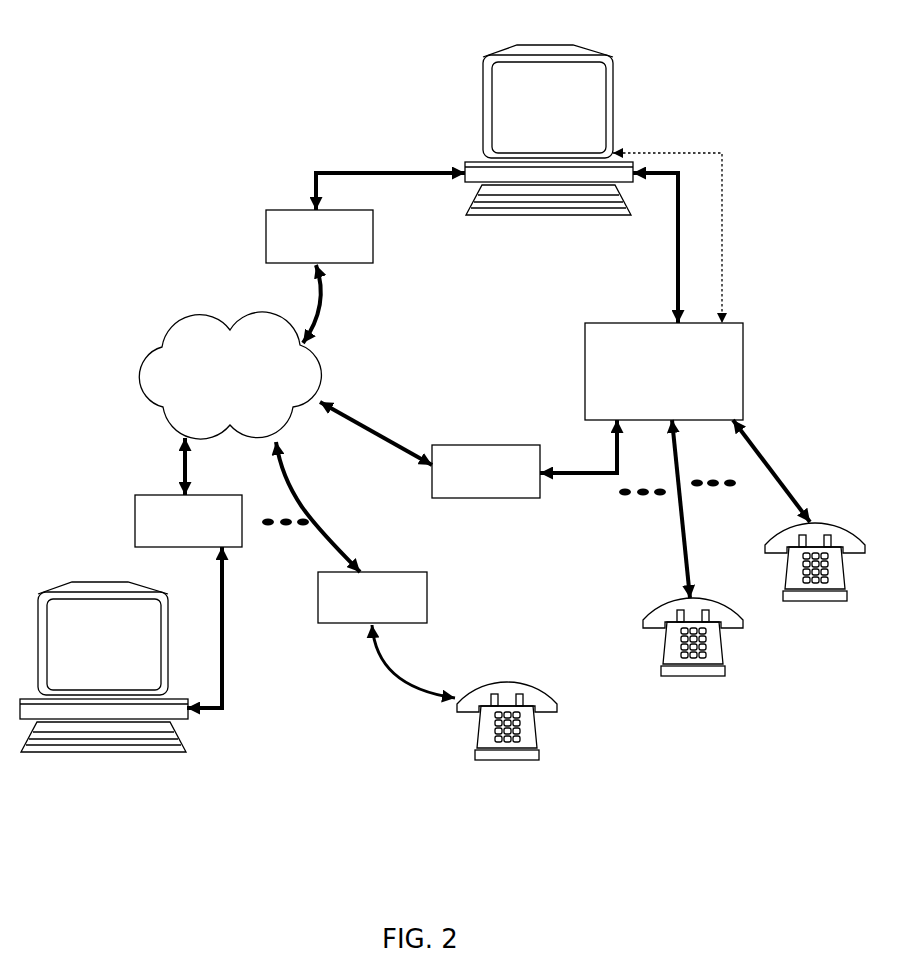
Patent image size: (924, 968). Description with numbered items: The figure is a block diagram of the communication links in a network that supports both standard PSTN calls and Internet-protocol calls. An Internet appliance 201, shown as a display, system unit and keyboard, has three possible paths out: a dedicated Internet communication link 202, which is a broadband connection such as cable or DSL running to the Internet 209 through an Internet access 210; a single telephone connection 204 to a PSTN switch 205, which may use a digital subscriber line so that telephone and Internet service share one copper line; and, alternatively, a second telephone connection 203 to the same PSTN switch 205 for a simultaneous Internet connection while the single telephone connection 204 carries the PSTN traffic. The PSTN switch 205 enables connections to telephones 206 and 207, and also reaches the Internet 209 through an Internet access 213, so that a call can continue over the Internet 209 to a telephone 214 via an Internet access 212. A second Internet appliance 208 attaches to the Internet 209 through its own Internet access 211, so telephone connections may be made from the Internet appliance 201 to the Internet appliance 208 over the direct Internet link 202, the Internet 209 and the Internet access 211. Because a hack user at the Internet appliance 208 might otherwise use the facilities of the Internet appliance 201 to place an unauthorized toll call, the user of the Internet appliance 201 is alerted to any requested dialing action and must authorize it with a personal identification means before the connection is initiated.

The Internet appliance 201 is at (622, 65).
The dedicated Internet communication link 202 is at (390, 160).
The second telephone connection 203 is at (728, 215).
The single telephone connection 204 is at (672, 250).
The PSTN switch 205 is at (747, 380).
The telephone 206 is at (825, 525).
The telephone 207 is at (723, 655).
The Internet appliance 208 is at (190, 763).
The Internet 209 is at (163, 347).
The internet access 210 is at (368, 263).
The Internet access 211 is at (122, 517).
The Internet access 212 is at (427, 602).
The Internet access 213 is at (478, 445).
The telephone 214 is at (543, 740).